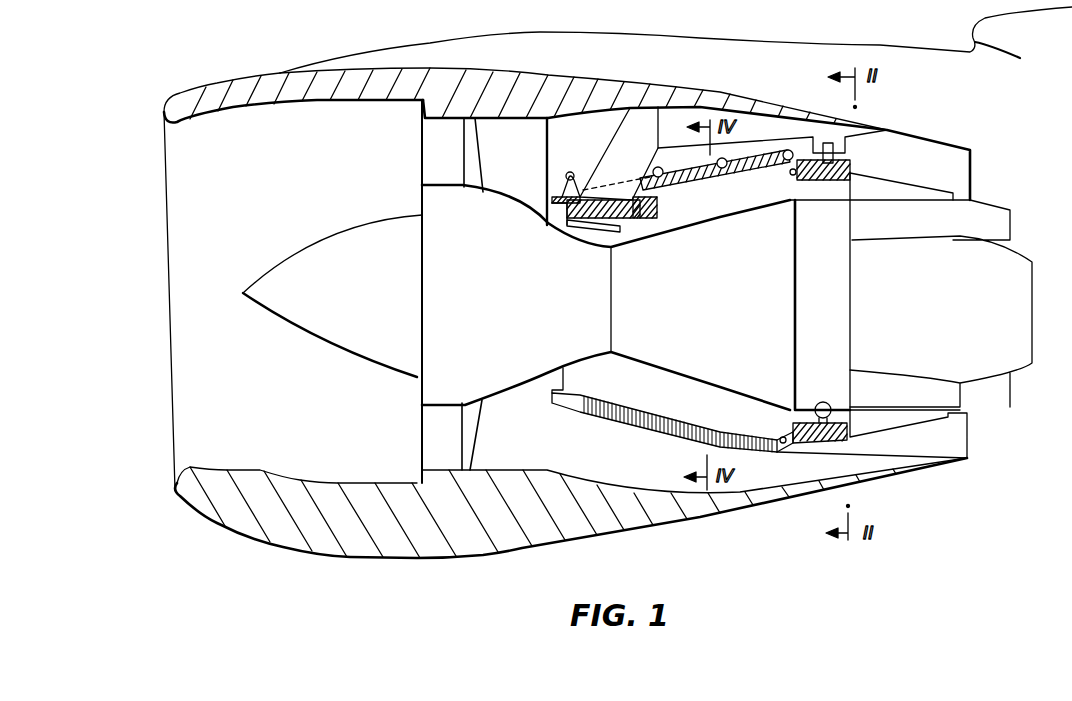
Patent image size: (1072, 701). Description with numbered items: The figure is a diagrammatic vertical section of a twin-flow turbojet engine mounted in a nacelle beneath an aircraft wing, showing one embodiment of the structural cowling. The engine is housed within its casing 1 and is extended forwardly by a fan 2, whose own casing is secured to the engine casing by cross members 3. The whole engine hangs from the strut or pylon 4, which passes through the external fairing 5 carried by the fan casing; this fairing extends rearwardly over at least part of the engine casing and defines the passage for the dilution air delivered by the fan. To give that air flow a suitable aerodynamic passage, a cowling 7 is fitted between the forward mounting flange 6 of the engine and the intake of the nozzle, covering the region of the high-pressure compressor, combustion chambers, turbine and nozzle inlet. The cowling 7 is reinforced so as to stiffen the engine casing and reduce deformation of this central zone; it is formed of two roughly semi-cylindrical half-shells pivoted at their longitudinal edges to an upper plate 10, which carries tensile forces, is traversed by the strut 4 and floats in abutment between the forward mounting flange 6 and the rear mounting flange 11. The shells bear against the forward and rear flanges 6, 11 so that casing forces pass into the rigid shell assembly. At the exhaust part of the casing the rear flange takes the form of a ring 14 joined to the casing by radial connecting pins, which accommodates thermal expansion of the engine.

The casing 1 is at (665, 373).
The fan 2 is at (393, 559).
The cross members 3 is at (480, 433).
The strut or pylon 4 is at (617, 142).
The external fairing 5 is at (560, 78).
The forward mounting flange 6 is at (566, 378).
The cowling 7 is at (628, 427).
The upper plate 10 is at (697, 170).
The rear mounting flange 11 is at (795, 177).
The ring 14 is at (845, 167).